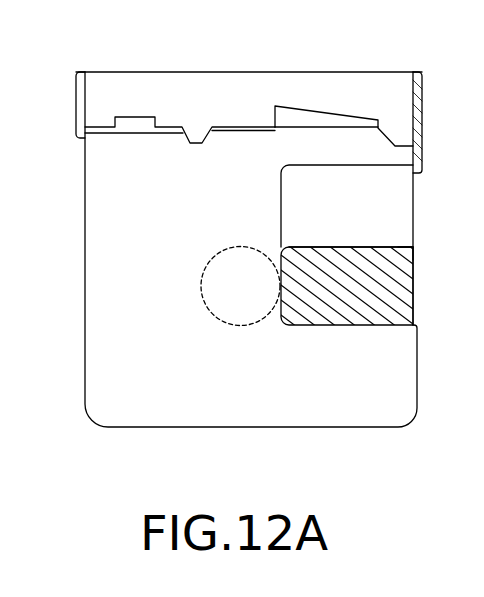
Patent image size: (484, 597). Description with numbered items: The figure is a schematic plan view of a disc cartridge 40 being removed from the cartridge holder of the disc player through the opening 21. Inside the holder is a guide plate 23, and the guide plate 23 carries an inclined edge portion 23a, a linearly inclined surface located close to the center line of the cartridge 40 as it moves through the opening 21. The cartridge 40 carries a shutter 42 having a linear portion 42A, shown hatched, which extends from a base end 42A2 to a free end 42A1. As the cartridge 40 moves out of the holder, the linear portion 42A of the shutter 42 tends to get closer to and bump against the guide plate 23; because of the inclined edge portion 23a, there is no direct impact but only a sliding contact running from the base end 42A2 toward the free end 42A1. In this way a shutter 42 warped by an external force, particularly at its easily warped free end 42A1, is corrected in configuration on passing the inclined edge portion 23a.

The opening 21 is at (170, 72).
The guide plate 23 is at (240, 88).
The inclined edge portion 23a is at (328, 110).
The disc cartridge 40 is at (120, 405).
The shutter 42 is at (357, 312).
The linear portion 42A is at (355, 247).
The free end 42A1 is at (294, 247).
The base end 42A2 is at (398, 247).